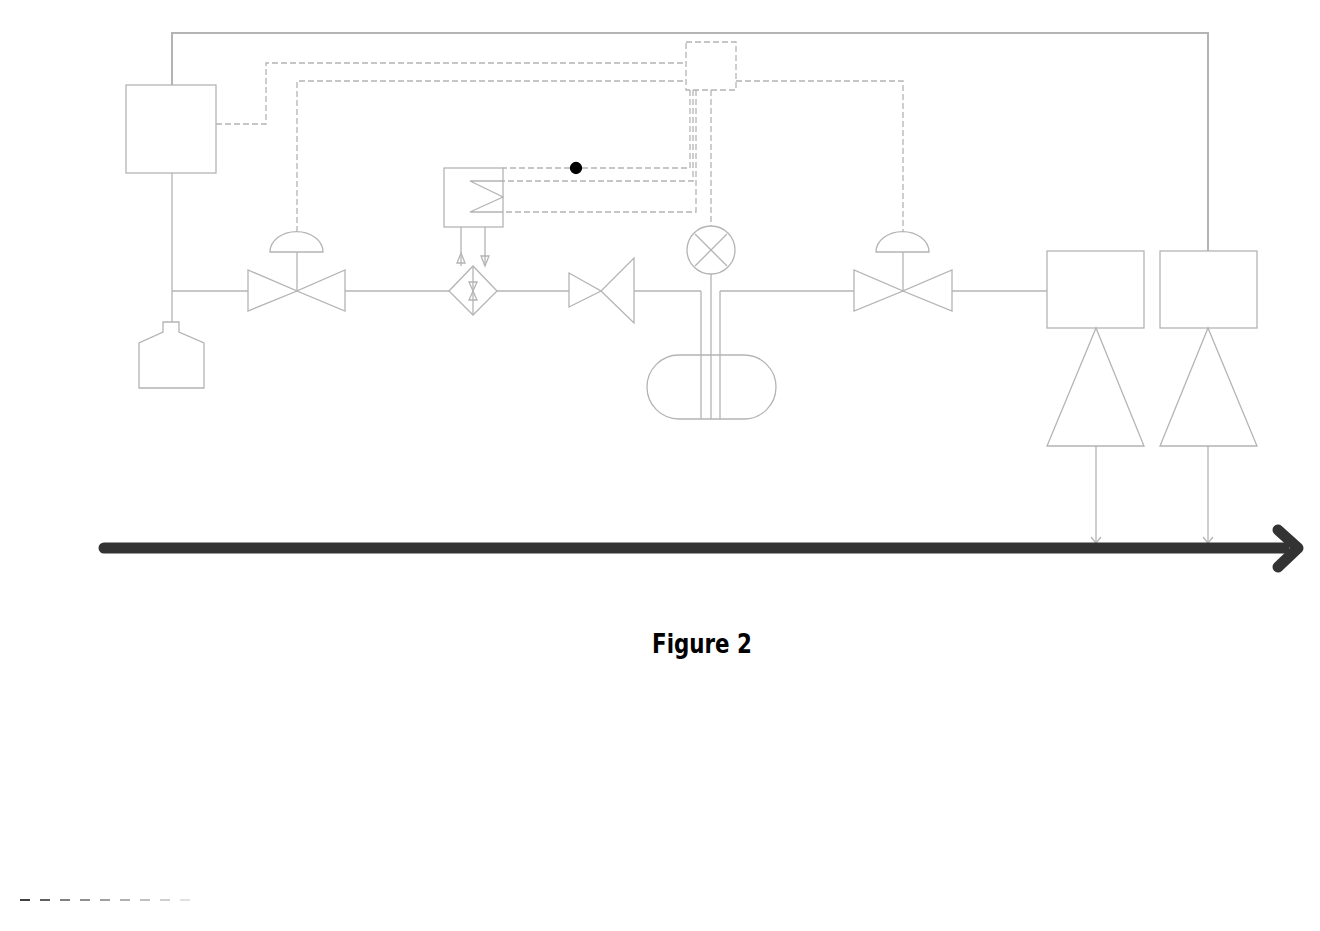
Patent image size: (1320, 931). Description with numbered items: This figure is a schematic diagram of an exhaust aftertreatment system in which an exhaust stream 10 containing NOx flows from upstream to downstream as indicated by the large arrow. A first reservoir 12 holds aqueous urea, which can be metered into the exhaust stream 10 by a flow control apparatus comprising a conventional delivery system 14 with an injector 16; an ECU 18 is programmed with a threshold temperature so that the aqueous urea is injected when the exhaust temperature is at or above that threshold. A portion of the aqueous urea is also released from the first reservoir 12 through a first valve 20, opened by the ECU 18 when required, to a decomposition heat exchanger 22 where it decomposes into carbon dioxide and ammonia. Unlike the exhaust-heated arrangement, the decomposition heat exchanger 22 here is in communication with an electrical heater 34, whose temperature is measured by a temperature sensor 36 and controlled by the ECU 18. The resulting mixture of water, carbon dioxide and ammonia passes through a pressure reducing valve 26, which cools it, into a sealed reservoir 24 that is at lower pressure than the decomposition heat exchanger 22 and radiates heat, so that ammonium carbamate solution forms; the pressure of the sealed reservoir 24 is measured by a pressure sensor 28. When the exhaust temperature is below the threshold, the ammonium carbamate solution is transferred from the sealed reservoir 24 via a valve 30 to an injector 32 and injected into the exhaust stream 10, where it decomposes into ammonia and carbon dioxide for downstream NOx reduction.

The exhaust stream 10 is at (701, 548).
The first reservoir 12 is at (171, 355).
The delivery system 14 is at (171, 129).
The injector 16 is at (1208, 397).
The ECU 18 is at (559, 137).
The first valve 20 is at (296, 288).
The decomposition heat exchanger 22 is at (473, 305).
The sealed reservoir 24 is at (711, 369).
The pressure reducing valve 26 is at (601, 301).
The pressure sensor 28 is at (723, 322).
The valve 30 is at (903, 288).
The injector 32 is at (1095, 397).
The electrical heater 34 is at (473, 205).
The temperature sensor 36 is at (576, 159).